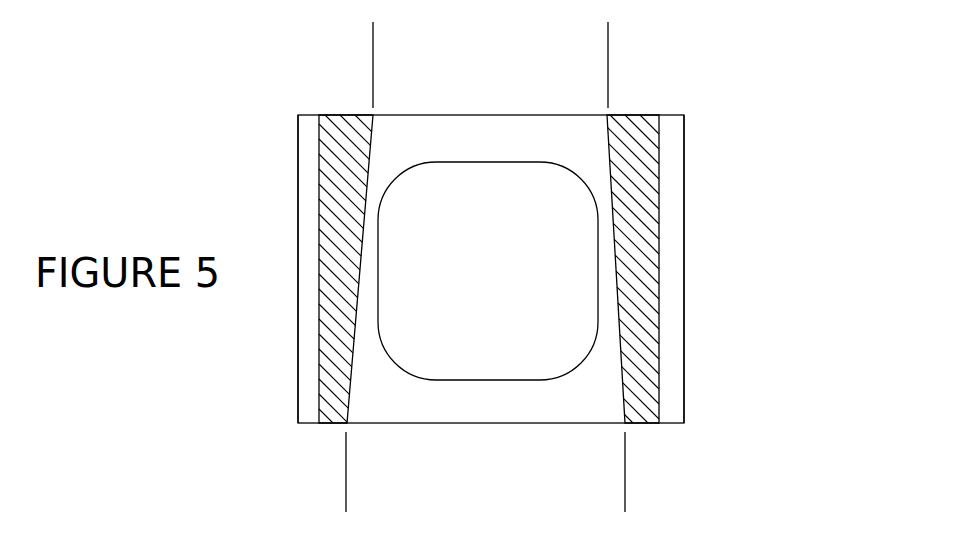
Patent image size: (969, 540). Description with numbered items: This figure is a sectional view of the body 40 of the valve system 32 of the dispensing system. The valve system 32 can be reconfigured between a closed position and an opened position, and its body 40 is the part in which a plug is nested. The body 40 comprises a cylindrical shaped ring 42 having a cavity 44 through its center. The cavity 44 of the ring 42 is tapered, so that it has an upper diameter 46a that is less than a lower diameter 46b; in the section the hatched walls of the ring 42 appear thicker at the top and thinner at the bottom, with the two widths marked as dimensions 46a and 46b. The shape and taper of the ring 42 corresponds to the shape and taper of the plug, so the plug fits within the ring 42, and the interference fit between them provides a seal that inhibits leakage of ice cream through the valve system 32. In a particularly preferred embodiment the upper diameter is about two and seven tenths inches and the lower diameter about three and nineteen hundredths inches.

The valve system 32 is at (677, 88).
The body 40 is at (684, 222).
The cylindrical shaped ring 42 is at (342, 110).
The cavity 44 is at (492, 130).
The upper diameter 46a is at (608, 38).
The lower diameter 46b is at (625, 497).